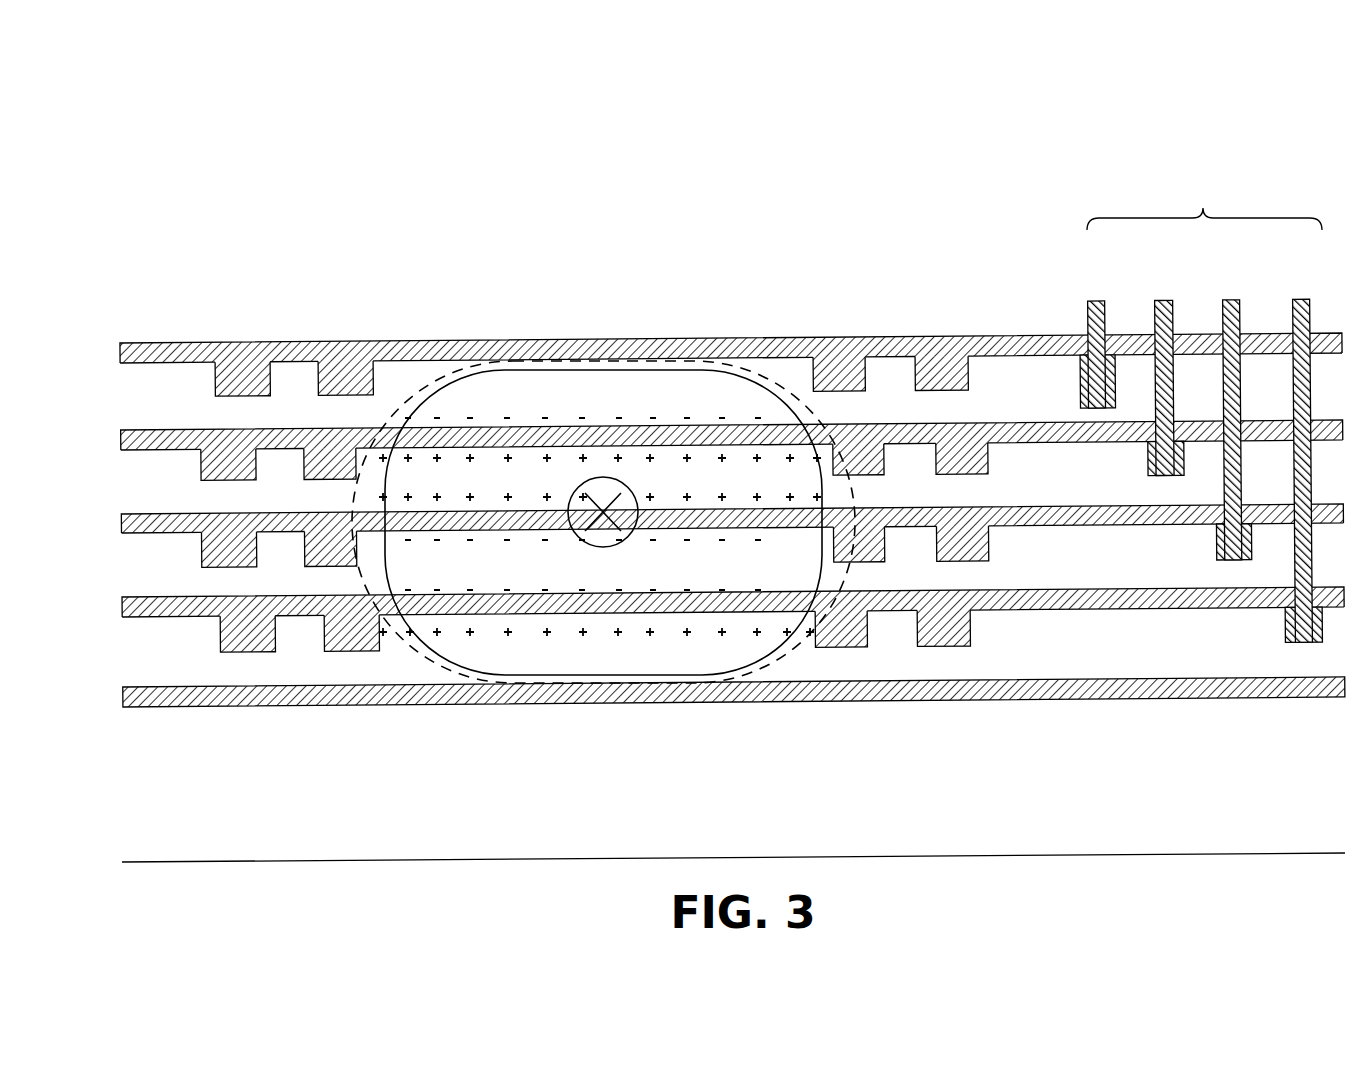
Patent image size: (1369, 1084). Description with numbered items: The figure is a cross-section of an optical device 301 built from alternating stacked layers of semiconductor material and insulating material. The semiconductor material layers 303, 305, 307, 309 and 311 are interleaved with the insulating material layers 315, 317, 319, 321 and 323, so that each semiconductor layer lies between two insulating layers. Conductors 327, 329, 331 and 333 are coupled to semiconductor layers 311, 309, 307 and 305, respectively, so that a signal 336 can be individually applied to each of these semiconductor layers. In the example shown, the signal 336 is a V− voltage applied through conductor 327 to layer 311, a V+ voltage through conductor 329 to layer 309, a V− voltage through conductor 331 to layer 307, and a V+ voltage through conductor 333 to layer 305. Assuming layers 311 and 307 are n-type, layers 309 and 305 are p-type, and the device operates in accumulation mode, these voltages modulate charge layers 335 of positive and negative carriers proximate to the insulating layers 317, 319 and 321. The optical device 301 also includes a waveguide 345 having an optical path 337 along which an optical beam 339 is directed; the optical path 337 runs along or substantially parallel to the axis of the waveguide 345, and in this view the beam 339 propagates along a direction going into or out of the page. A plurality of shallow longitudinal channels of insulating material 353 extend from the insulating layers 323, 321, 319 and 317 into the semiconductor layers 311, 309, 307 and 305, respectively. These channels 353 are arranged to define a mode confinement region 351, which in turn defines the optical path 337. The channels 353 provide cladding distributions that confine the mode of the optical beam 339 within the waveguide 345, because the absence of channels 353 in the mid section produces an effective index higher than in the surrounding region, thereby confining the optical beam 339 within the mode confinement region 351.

The optical device 301 is at (168, 127).
The layer of semiconductor material 303 is at (133, 787).
The layer of semiconductor material 305 is at (157, 669).
The layer of semiconductor material 307 is at (157, 582).
The layer of semiconductor material 309 is at (157, 500).
The layer of semiconductor material 311 is at (157, 413).
The layer of insulating material 315 is at (116, 695).
The layer of insulating material 317 is at (116, 607).
The layer of insulating material 319 is at (116, 523).
The layer of insulating material 321 is at (116, 438).
The layer of insulating material 323 is at (116, 350).
The conductor 327 is at (1086, 312).
The conductor 329 is at (1160, 312).
The conductor 331 is at (1228, 312).
The conductor 333 is at (1298, 312).
The charge layers 335 is at (427, 402).
The signal 336 is at (1236, 185).
The optical path 337 is at (622, 490).
The optical beam 339 is at (470, 684).
The waveguide 345 is at (353, 274).
The mode confinement region 351 is at (772, 676).
The shallow longitudinal channels of insulating material 353 is at (247, 397).